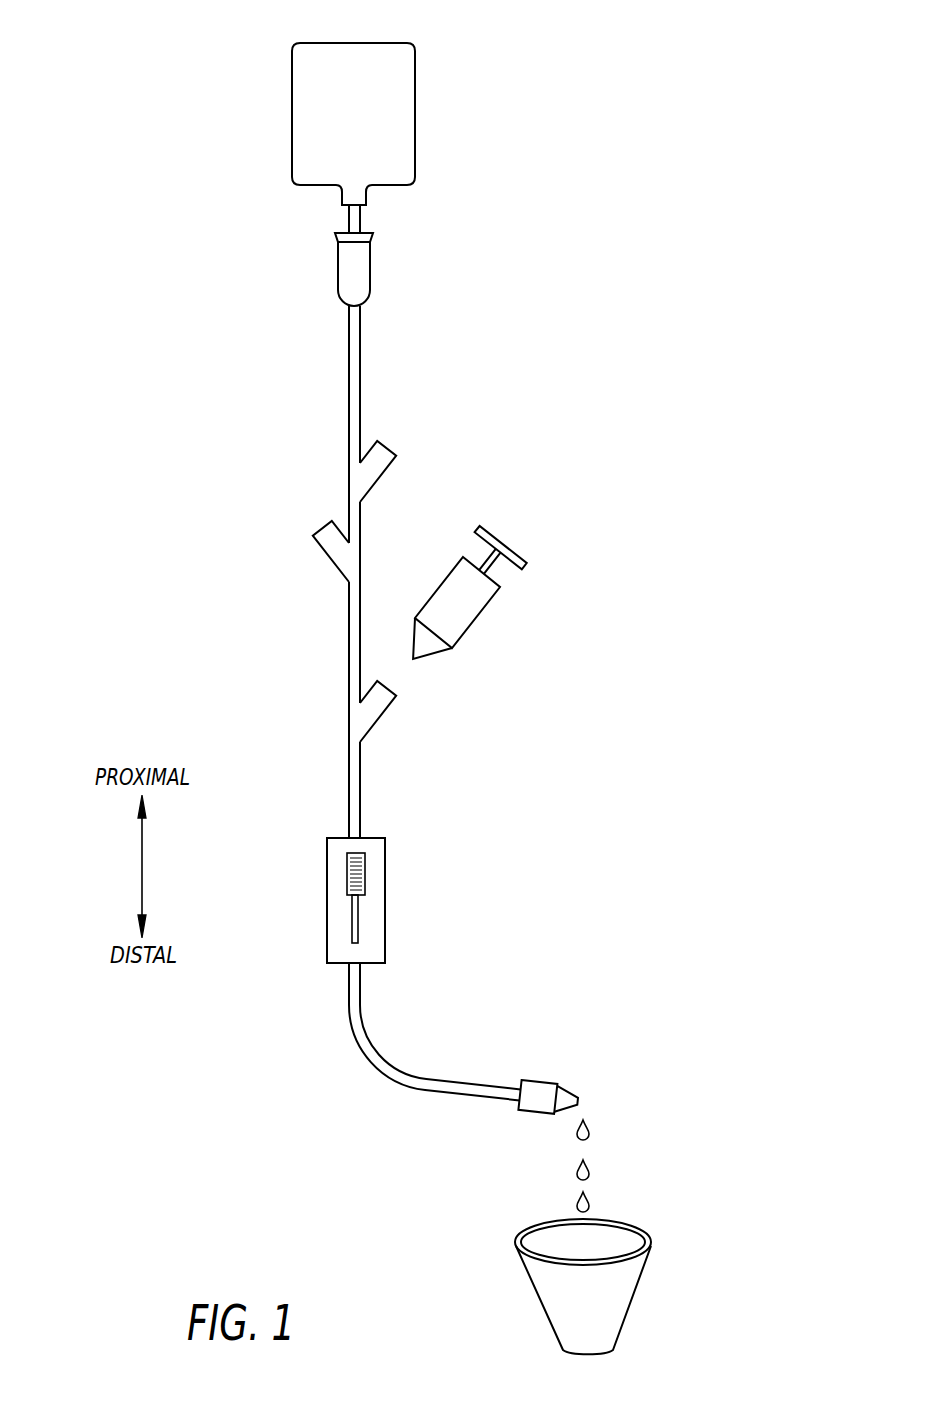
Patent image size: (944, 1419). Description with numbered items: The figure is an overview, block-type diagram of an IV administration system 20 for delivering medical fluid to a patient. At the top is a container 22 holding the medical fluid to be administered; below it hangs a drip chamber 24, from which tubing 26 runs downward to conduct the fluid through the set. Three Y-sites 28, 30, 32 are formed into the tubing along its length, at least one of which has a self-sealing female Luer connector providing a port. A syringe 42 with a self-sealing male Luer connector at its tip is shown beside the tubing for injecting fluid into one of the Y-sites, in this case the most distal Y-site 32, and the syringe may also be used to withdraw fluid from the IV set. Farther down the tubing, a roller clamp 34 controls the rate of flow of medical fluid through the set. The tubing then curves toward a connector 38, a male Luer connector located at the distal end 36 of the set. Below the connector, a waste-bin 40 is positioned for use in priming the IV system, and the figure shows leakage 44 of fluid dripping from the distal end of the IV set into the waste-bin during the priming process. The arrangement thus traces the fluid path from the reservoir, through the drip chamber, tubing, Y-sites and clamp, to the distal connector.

The IV administration system 20 is at (165, 303).
The container 22 is at (402, 98).
The drip chamber 24 is at (368, 270).
The tubing 26 is at (358, 387).
The Y-site 28 is at (365, 482).
The Y-site 30 is at (347, 560).
The Y-site 32 is at (363, 722).
The roller clamp 34 is at (378, 880).
The distal end 36 is at (508, 1126).
The connector 38 is at (538, 1090).
The waste-bin 40 is at (555, 1312).
The syringe 42 is at (478, 618).
The leakage 44 is at (590, 1135).